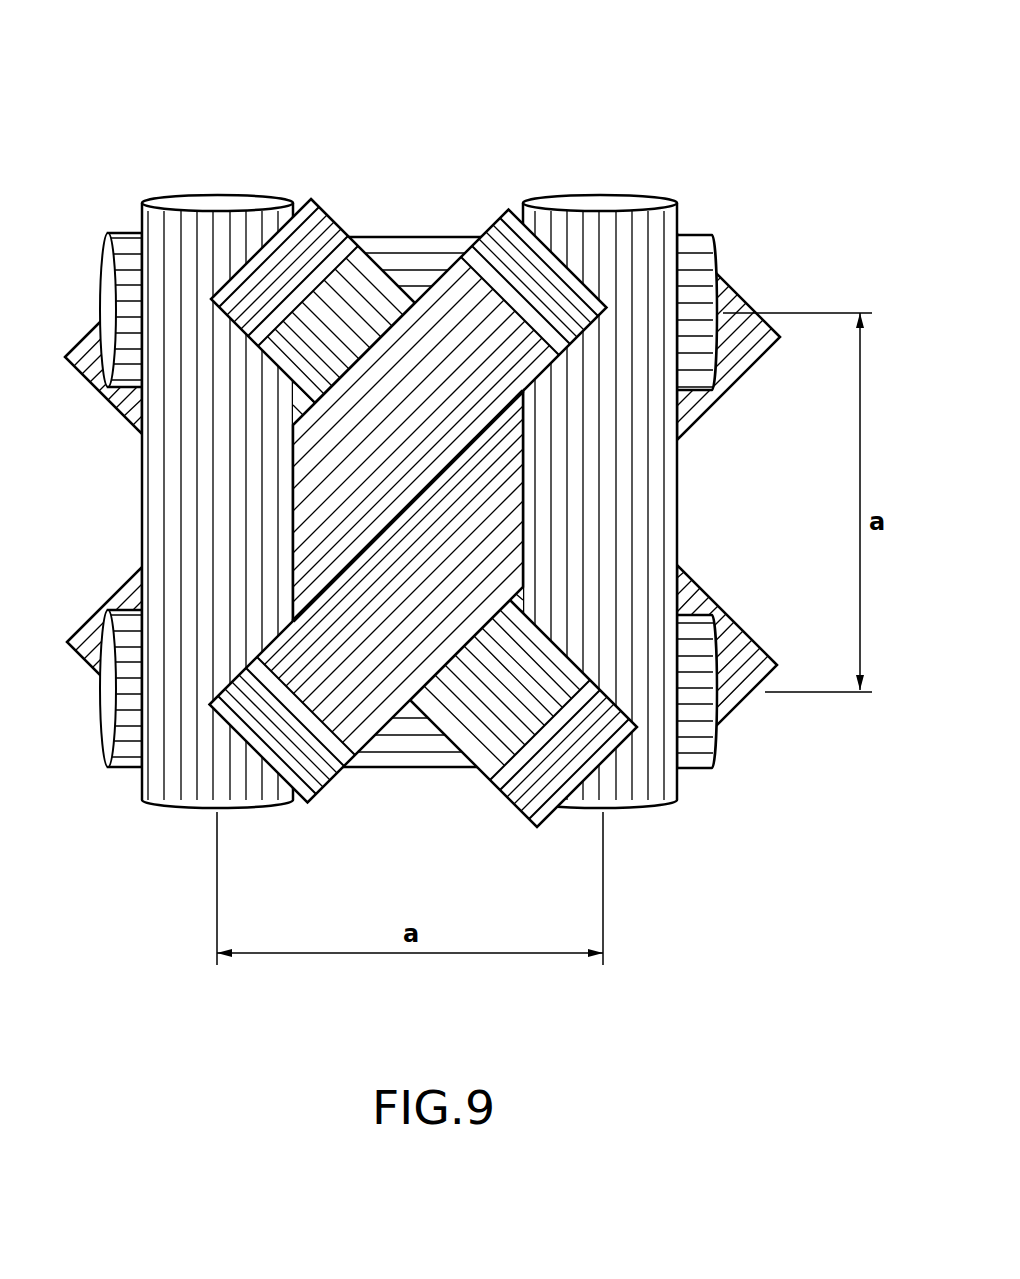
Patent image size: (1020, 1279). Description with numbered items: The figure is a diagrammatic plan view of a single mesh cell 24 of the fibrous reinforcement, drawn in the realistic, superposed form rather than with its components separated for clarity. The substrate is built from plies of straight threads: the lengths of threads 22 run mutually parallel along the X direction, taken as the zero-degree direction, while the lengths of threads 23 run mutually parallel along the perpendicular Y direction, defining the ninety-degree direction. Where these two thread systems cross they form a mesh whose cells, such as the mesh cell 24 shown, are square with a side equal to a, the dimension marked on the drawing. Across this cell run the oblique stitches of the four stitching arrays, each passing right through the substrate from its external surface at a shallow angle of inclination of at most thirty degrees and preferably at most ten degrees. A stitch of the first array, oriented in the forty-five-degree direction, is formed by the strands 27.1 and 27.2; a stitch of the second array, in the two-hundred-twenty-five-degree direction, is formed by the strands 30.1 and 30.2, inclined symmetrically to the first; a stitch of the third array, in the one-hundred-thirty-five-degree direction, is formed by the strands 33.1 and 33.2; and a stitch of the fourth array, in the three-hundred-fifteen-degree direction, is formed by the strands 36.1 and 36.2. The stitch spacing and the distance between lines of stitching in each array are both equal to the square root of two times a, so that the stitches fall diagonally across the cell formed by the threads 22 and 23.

The lengths of straight threads 22 is at (697, 264).
The lengths of straight threads 23 is at (174, 222).
The mesh cell 24 is at (450, 104).
The strand 27.1 is at (458, 297).
The strand 27.2 is at (521, 262).
The strand 30.1 is at (352, 717).
The strand 30.2 is at (327, 772).
The strand 33.1 is at (392, 291).
The strand 33.2 is at (331, 222).
The strand 36.1 is at (490, 727).
The strand 36.2 is at (523, 797).